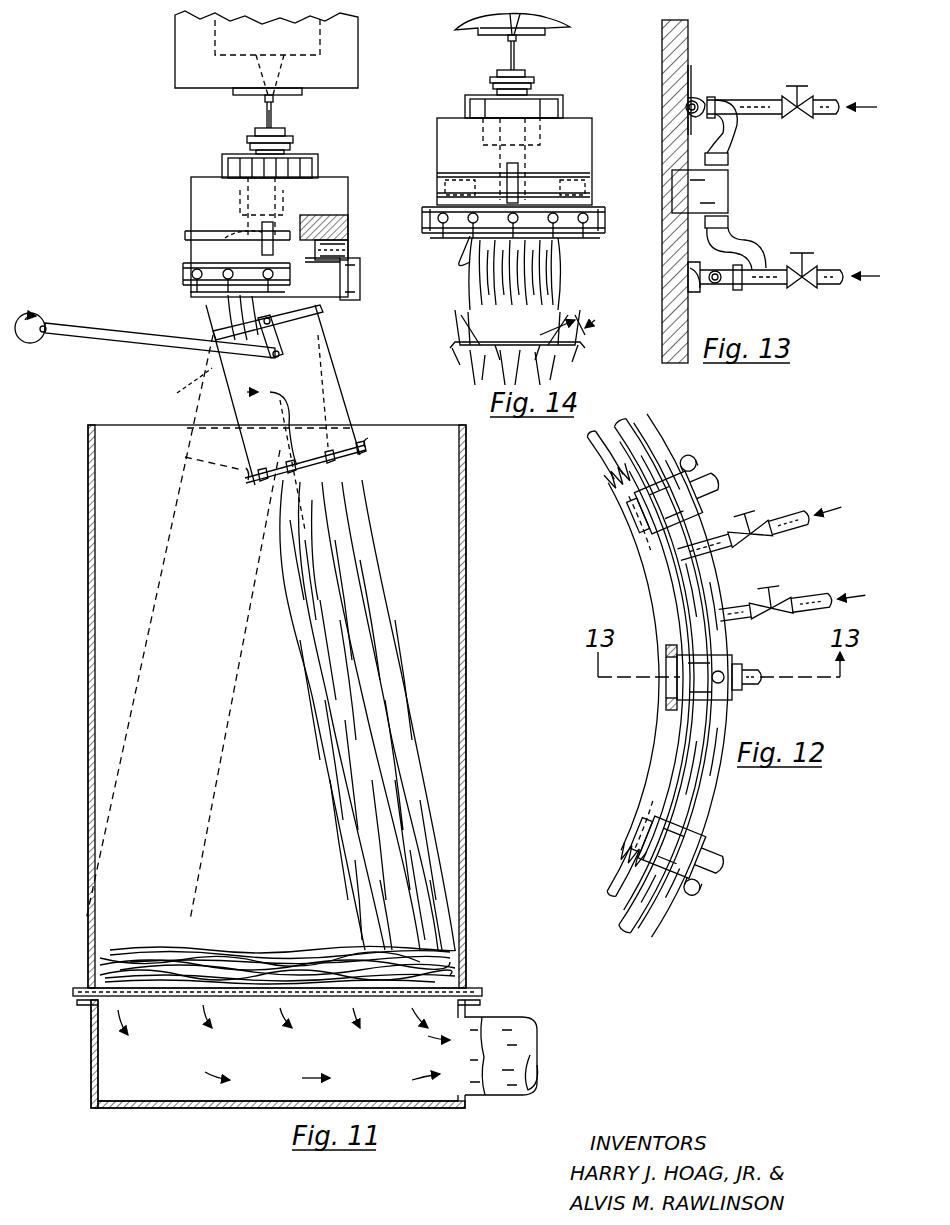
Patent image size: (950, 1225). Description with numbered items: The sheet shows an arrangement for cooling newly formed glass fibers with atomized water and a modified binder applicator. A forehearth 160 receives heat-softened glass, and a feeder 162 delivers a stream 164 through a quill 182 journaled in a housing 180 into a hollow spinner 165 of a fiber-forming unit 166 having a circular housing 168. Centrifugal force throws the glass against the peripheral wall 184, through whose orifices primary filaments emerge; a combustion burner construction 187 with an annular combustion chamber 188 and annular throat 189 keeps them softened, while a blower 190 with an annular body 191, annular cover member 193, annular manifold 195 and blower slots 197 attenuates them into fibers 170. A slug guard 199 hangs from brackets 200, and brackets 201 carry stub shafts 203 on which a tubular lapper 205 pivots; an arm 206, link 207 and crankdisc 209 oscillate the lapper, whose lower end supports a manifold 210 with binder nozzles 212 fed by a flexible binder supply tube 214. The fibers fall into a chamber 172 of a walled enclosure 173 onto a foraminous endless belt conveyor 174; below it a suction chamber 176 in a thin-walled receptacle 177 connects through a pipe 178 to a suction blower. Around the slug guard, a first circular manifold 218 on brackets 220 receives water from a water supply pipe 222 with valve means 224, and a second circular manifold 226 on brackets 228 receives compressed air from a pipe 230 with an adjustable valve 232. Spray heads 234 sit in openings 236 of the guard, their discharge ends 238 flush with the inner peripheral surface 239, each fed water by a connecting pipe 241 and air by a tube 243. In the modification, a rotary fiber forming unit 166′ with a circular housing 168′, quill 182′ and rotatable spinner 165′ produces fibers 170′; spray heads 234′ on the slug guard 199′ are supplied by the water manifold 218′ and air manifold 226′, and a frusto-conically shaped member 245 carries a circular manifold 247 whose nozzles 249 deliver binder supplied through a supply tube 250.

In FIG. 11, the forehearth 160 is at (175, 40).
In FIG. 11, the feeder 162 is at (240, 95).
In FIG. 11, the stream 164 is at (266, 110).
In FIG. 11, the hollow rotor or spinner 165 is at (300, 240).
In FIG. 11, the fiber-forming unit 166 is at (183, 165).
In FIG. 11, the housing 168 is at (191, 185).
In FIG. 11, the housing 180 is at (245, 160).
In FIG. 11, the tubular member or quill 182 is at (248, 205).
In FIG. 11, the peripheral wall 184 is at (270, 240).
In FIG. 11, the combustion burner construction 187 is at (335, 230).
In FIG. 11, the annular combustion chamber 188 is at (305, 225).
In FIG. 11, the annular throat 189 is at (318, 228).
In FIG. 11, the blower 190 is at (348, 244).
In FIG. 11, the annular body 191 is at (342, 260).
In FIG. 11, the annular cover member 193 is at (330, 222).
In FIG. 11, the annular manifold 195 is at (348, 250).
In FIG. 11, the blower slots 197 is at (360, 278).
In FIG. 11, the circular member or slug guard 199 is at (185, 282).
In FIG. 13, the circular member or slug guard 199 is at (662, 45).
In FIG. 12, the circular member or slug guard 199 is at (660, 576).
In FIG. 11, the brackets 200 is at (191, 230).
In FIG. 11, the brackets 201 is at (238, 328).
In FIG. 11, the stub shafts 203 is at (278, 330).
In FIG. 11, the tubular fiber-distributing member or lapper 205 is at (215, 378).
In FIG. 11, the arm or member 206 is at (240, 352).
In FIG. 11, the link 207 is at (125, 340).
In FIG. 11, the crankdisc or member 209 is at (18, 340).
In FIG. 11, the manifold 210 is at (258, 478).
In FIG. 11, the binder applicators or nozzles 212 is at (350, 455).
In FIG. 11, the flexible binder supply tube 214 is at (268, 400).
In FIG. 11, the first circular manifold 218 is at (215, 268).
In FIG. 13, the first circular manifold 218 is at (688, 112).
In FIG. 12, the first circular manifold 218 is at (598, 455).
In FIG. 13, the brackets 220 is at (691, 68).
In FIG. 13, the water supply pipe 222 is at (828, 100).
In FIG. 12, the water supply pipe 222 is at (805, 505).
In FIG. 13, the adjustable valve means 224 is at (811, 70).
In FIG. 12, the adjustable valve means 224 is at (752, 510).
In FIG. 11, the second circular manifold 226 is at (215, 288).
In FIG. 13, the second circular manifold 226 is at (705, 288).
In FIG. 12, the second circular manifold 226 is at (640, 440).
In FIG. 13, the brackets 228 is at (700, 266).
In FIG. 13, the pipe 230 is at (835, 268).
In FIG. 12, the pipe 230 is at (840, 580).
In FIG. 13, the adjustable valve 232 is at (825, 238).
In FIG. 12, the adjustable valve 232 is at (786, 580).
In FIG. 11, the spray heads or nozzle constructions 234 is at (183, 270).
In FIG. 13, the spray heads or nozzle constructions 234 is at (715, 190).
In FIG. 12, the spray heads or nozzle constructions 234 is at (632, 514).
In FIG. 13, the opening 236 is at (665, 180).
In FIG. 12, the opening 236 is at (666, 660).
In FIG. 13, the discharge ends 238 is at (670, 200).
In FIG. 12, the discharge ends 238 is at (668, 688).
In FIG. 13, the inner peripheral surface 239 is at (662, 74).
In FIG. 12, the inner peripheral surface 239 is at (670, 598).
In FIG. 13, the connecting pipe or tube 241 is at (730, 140).
In FIG. 12, the connecting pipe or tube 241 is at (680, 470).
In FIG. 13, the tube or pipe 243 is at (735, 240).
In FIG. 12, the tube or pipe 243 is at (698, 484).
In FIG. 14, the inverted frusto-conically shaped member 245 is at (470, 315).
In FIG. 14, the circular manifold 247 is at (475, 340).
In FIG. 14, the nozzles 249 is at (458, 348).
In FIG. 14, the supply tube 250 is at (548, 312).
In FIG. 11, the fibers 170 is at (378, 562).
In FIG. 11, the chamber 172 is at (293, 693).
In FIG. 11, the walled enclosure 173 is at (88, 605).
In FIG. 11, the foraminous endless belt conveyor 174 is at (88, 988).
In FIG. 11, the suction chamber 176 is at (278, 1052).
In FIG. 11, the thin-walled receptacle 177 is at (91, 1045).
In FIG. 11, the pipe 178 is at (512, 1098).
In FIG. 14, the rotary fiber forming unit 166′ is at (453, 98).
In FIG. 14, the circular housing 168′ is at (437, 128).
In FIG. 14, the quill 182′ is at (497, 155).
In FIG. 14, the rotatable spinner 165′ is at (483, 180).
In FIG. 14, the manifold 218′ is at (585, 168).
In FIG. 14, the slug guard or circular member 199′ is at (452, 235).
In FIG. 14, the spray heads or nozzle constructions 234′ is at (513, 222).
In FIG. 14, the manifold 226′ is at (570, 238).
In FIG. 14, the fibers 170′ is at (470, 275).